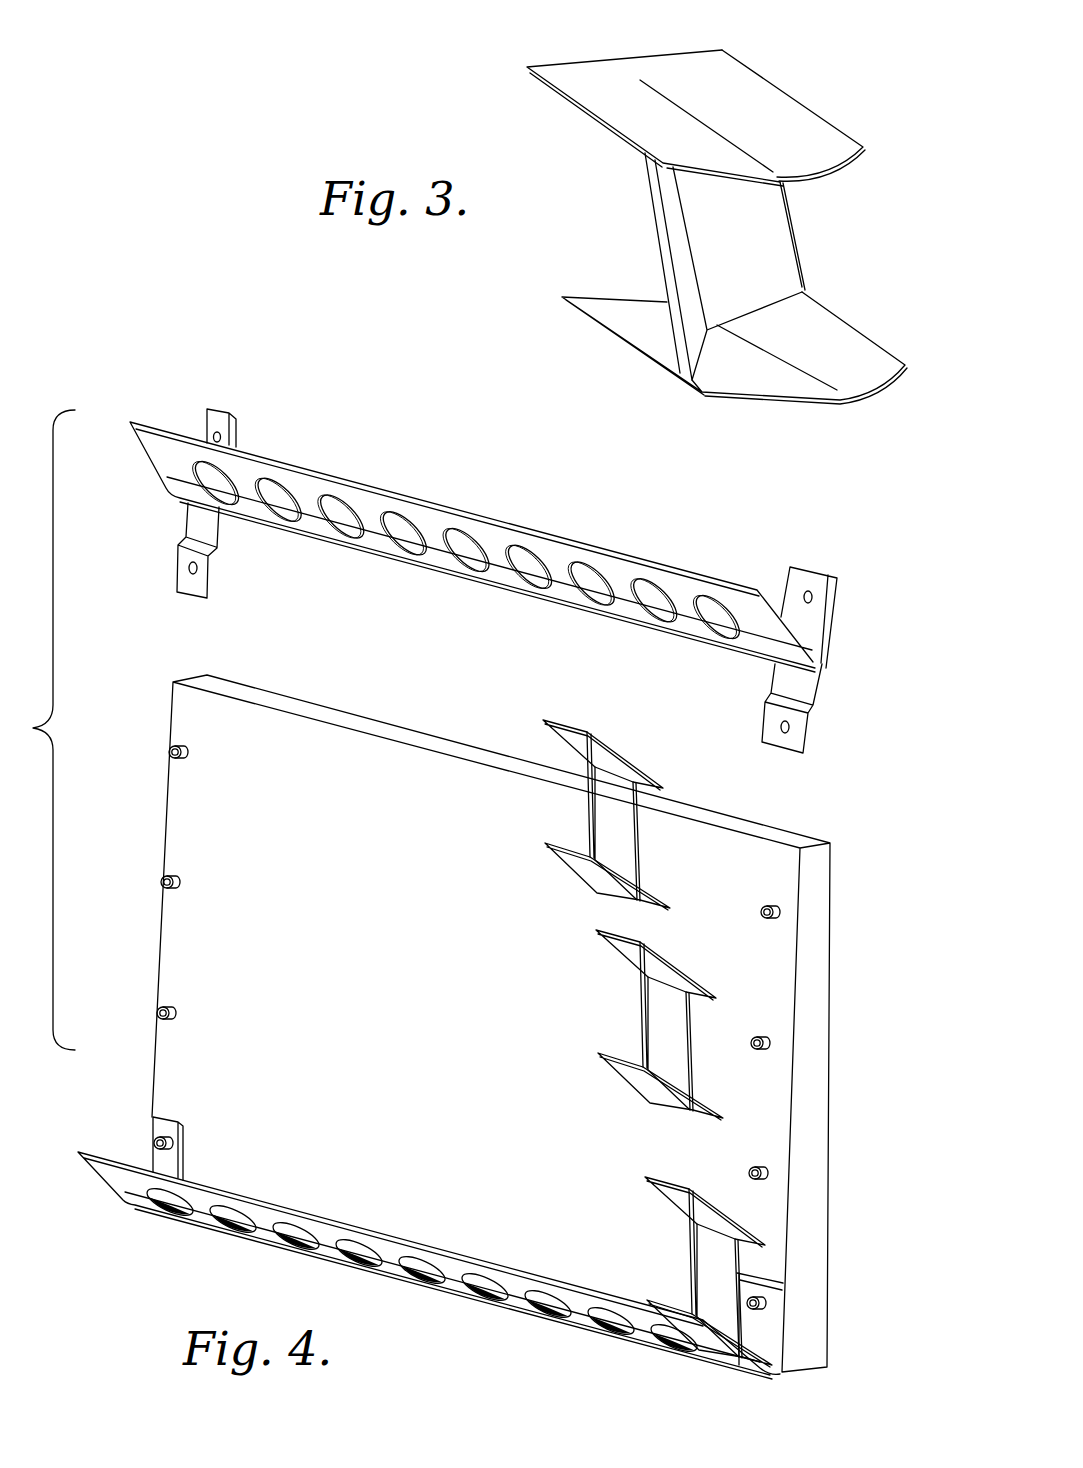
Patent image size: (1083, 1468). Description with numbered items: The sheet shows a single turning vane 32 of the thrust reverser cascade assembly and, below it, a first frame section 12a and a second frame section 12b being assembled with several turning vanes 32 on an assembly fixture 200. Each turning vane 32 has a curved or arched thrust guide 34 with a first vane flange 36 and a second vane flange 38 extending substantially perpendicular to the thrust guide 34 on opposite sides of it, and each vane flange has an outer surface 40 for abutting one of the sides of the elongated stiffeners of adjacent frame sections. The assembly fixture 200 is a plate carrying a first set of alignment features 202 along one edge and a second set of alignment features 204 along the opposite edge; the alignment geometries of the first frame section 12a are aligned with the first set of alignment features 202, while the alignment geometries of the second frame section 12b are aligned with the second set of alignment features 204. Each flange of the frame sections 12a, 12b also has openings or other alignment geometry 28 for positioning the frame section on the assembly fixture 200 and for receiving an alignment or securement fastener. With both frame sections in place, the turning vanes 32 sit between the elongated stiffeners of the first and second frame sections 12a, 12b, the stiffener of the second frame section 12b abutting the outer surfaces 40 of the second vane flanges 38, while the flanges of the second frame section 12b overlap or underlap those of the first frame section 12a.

In FIG. 4, the first end frame section 12a is at (252, 1184).
In FIG. 4, the second frame section 12b is at (170, 412).
In FIG. 4, the alignment geometry 28 is at (766, 1307).
In FIG. 3, the turning vane 32 is at (515, 93).
In FIG. 4, the turning vane 32 is at (541, 717).
In FIG. 3, the thrust guide 34 is at (806, 243).
In FIG. 3, the first vane flange 36 is at (624, 350).
In FIG. 3, the second vane flange 38 is at (796, 82).
In FIG. 3, the outer surface 40 is at (600, 97).
In FIG. 4, the assembly fixture 200 is at (858, 876).
In FIG. 4, the first set of alignment features 202 is at (170, 1010).
In FIG. 4, the second set of alignment features 204 is at (763, 1170).